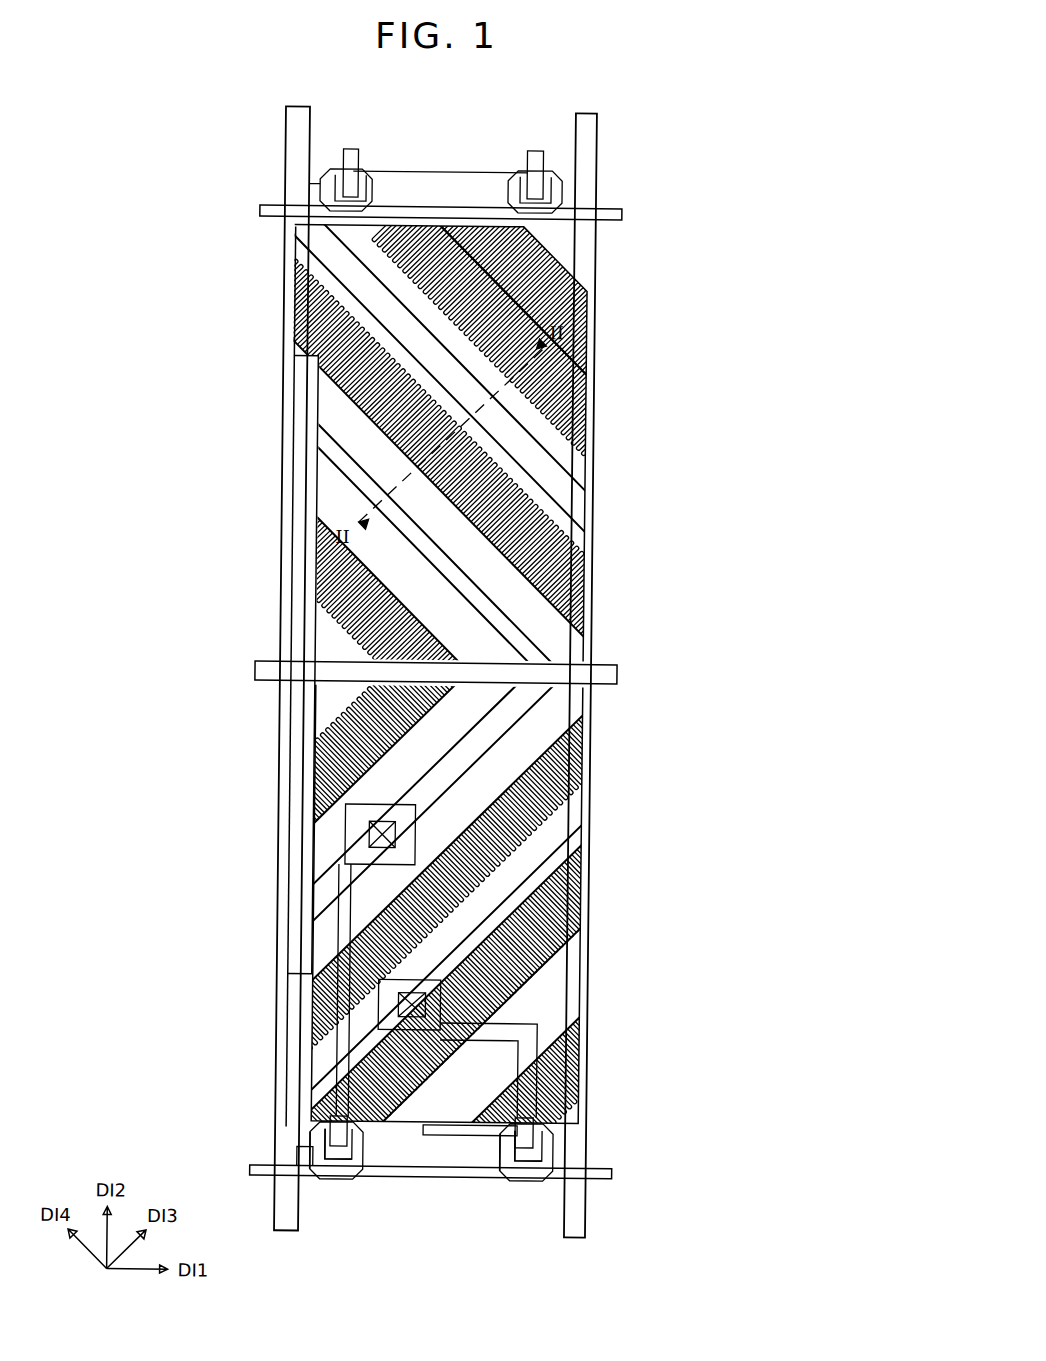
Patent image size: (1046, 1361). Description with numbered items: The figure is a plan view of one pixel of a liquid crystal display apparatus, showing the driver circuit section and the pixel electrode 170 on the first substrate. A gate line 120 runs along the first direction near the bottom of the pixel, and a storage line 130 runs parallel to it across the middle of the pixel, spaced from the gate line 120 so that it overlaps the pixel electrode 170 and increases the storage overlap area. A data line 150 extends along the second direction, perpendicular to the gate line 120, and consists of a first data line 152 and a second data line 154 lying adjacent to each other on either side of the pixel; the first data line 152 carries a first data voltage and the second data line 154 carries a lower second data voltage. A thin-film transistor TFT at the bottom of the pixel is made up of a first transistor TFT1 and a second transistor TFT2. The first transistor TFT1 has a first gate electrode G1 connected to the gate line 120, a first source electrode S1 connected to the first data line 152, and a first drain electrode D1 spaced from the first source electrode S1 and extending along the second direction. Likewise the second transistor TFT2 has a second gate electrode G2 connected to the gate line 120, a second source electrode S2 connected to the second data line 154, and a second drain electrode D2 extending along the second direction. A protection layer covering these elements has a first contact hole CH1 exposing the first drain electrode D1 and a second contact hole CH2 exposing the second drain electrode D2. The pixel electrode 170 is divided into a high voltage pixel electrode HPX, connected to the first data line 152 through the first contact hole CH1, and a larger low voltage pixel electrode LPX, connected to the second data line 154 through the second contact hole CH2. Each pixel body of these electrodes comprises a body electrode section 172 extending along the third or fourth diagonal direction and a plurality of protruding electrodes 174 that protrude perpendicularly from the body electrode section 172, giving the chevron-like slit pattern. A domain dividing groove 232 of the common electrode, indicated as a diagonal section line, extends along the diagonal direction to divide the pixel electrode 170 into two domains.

The data line 150 is at (435, 656).
The first data line 152 is at (298, 118).
The second data line 154 is at (580, 121).
The gate line 120 is at (256, 1160).
The storage line 130 is at (255, 665).
The domain dividing groove 232 is at (530, 447).
The pixel electrode 170 is at (523, 756).
The high voltage pixel electrode HPX is at (540, 716).
The low voltage pixel electrode LPX is at (704, 705).
The body electrode section 172 is at (355, 306).
The protruding electrodes 174 is at (328, 342).
The first contact hole CH1 is at (377, 838).
The second contact hole CH2 is at (404, 1002).
The thin-film transistor TFT is at (436, 723).
The first transistor TFT1 is at (353, 1064).
The second transistor TFT2 is at (497, 1144).
The first gate electrode G1 is at (322, 1172).
The first source electrode S1 is at (340, 1152).
The first drain electrode D1 is at (356, 1160).
The second gate electrode G2 is at (507, 1172).
The second source electrode S2 is at (528, 1152).
The second drain electrode D2 is at (497, 1127).